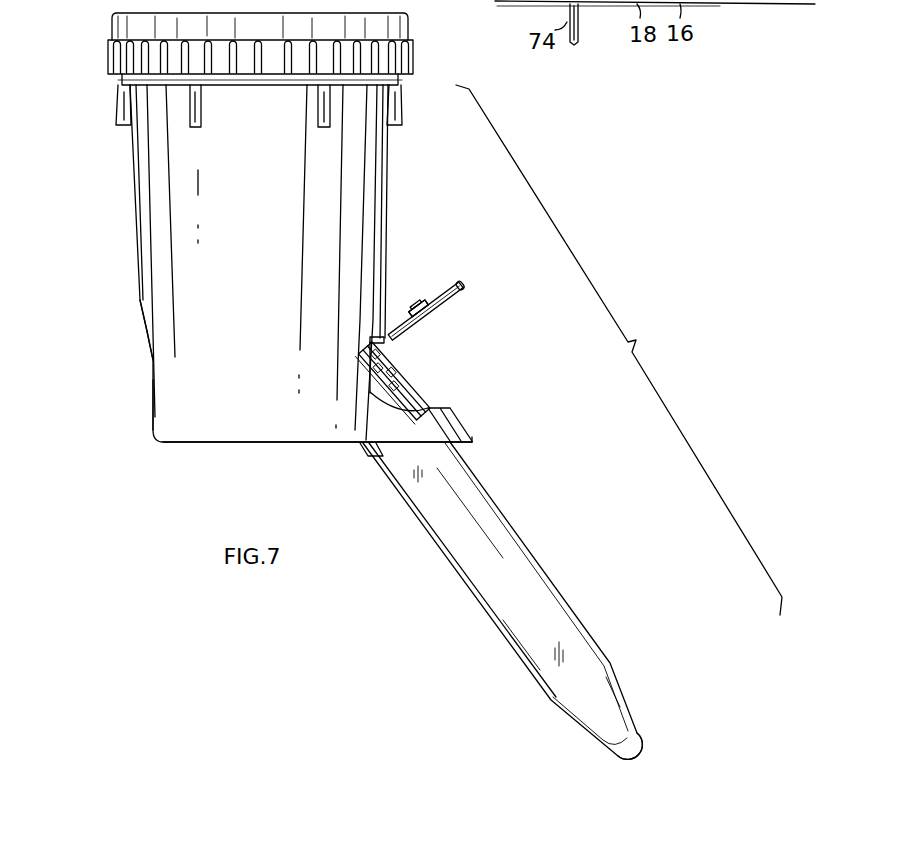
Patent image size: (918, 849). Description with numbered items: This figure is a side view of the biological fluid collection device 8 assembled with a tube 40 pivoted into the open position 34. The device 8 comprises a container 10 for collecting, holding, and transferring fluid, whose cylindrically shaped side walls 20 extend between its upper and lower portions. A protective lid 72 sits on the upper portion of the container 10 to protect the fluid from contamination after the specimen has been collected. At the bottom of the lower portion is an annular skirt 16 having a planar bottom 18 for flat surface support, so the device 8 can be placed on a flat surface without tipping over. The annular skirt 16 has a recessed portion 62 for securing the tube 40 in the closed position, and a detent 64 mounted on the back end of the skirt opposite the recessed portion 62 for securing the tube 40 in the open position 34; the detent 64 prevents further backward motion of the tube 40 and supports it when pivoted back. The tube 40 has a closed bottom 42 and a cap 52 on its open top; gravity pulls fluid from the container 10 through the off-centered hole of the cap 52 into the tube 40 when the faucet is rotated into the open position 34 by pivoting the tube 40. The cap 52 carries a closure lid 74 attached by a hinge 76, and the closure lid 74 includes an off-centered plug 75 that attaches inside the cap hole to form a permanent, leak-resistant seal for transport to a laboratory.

The biological fluid collection device 8 is at (646, 341).
The container 10 is at (122, 218).
The lid 72 is at (110, 38).
The side walls 20 is at (357, 172).
The recessed portion 62 is at (140, 310).
The annular skirt 16 is at (168, 390).
The planar bottom 18 is at (213, 443).
The closure lid 74 is at (450, 298).
The plug 75 is at (417, 296).
The hinge 76 is at (390, 339).
The cap 52 is at (423, 395).
The detent 64 is at (460, 423).
The tube 40 is at (566, 563).
The closed bottom 42 is at (640, 748).
The open position 34 is at (538, 423).